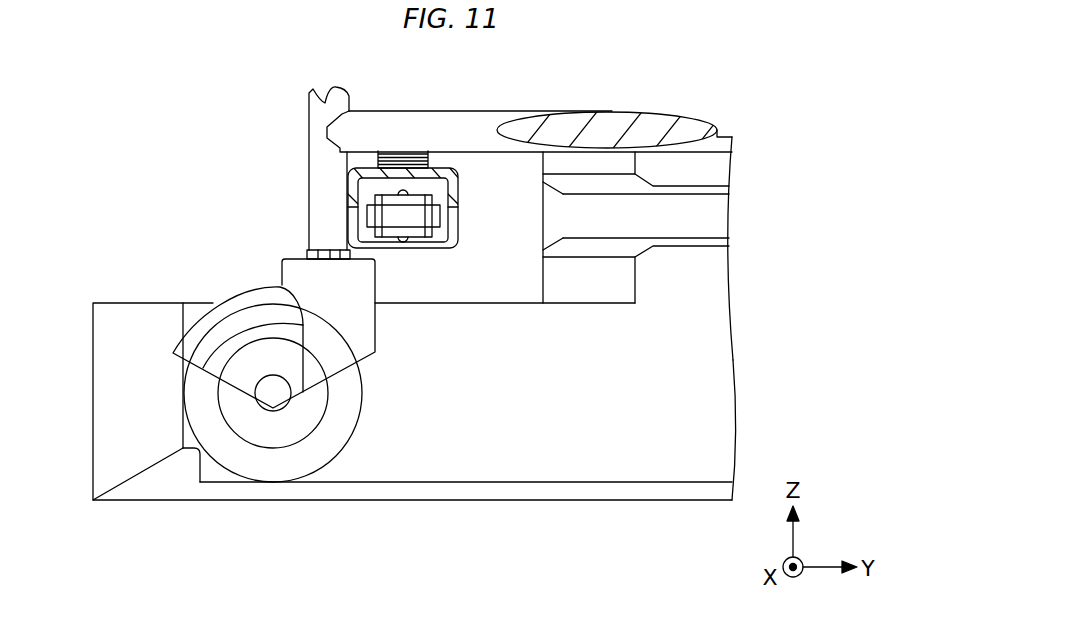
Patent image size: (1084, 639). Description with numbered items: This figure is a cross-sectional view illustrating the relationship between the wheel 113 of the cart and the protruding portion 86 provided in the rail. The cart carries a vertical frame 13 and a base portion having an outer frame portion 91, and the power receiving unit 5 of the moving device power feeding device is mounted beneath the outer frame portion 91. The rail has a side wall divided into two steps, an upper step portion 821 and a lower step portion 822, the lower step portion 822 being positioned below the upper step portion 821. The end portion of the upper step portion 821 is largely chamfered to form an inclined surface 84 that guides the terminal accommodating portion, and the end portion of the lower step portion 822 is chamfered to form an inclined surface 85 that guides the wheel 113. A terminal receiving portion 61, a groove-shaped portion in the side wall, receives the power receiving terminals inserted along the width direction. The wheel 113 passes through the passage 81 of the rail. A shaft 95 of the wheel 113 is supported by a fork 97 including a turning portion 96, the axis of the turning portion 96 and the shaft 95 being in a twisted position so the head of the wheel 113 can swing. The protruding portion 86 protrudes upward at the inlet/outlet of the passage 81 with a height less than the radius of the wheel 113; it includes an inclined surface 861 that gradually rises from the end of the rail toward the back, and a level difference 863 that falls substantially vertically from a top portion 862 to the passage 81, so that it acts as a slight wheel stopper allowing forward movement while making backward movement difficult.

The vertical frame 13 is at (322, 98).
The outer frame portion 91 is at (405, 128).
The power receiving unit 5 is at (437, 170).
The inclined surfaces 84 is at (613, 163).
The terminal receiving portion 61 is at (700, 216).
The turning portion 96 is at (327, 253).
The fork 97 is at (275, 347).
The inclined surfaces 85 is at (115, 333).
The top portion 862 is at (183, 443).
The inclined surface 861 is at (147, 466).
The level difference 863 is at (202, 468).
The protruding portion 86 is at (187, 463).
The shaft 95 is at (275, 393).
The wheel 113 is at (292, 463).
The passage 81 is at (488, 483).
The upper step portion 821 is at (680, 275).
The lower step portion 822 is at (680, 393).